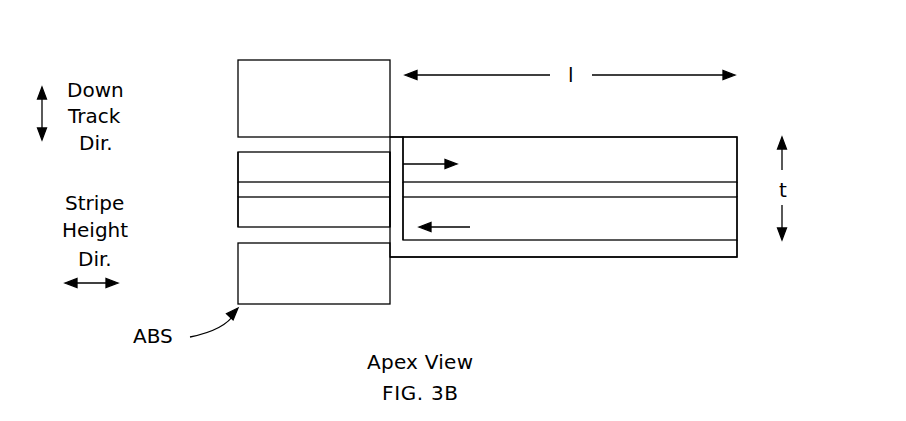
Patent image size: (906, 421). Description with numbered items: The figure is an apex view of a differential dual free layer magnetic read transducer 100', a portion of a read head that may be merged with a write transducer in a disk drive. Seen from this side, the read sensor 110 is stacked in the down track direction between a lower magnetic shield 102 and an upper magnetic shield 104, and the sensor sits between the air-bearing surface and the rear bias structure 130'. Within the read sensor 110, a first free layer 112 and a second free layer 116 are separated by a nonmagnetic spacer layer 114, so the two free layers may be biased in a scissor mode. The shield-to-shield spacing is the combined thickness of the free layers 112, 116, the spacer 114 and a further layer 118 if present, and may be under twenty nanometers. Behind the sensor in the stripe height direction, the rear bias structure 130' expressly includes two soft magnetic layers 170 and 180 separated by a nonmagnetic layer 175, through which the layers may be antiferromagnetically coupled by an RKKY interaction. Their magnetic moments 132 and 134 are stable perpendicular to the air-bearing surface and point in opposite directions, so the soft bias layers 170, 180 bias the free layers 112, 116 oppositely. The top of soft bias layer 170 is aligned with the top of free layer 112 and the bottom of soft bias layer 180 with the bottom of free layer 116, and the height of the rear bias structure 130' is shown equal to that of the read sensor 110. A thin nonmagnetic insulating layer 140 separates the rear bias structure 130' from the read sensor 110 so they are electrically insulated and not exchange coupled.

The magnetic read transducer 100' is at (455, 164).
The magnetic shield 104 is at (314, 98).
The free layer 116 is at (314, 167).
The free layer 112 is at (314, 212).
The magnetic shield 102 is at (314, 273).
The read sensor 110 is at (181, 180).
The nonmagnetic spacer layer 114 is at (237, 190).
The rear bias structure 130' is at (581, 194).
The soft magnetic layer 180 is at (570, 159).
The soft magnetic layer 170 is at (570, 218).
The nonmagnetic layer 175 is at (737, 188).
The layer 118 is at (405, 137).
The insulating layer 140 is at (397, 258).
The magnetic moment 134 is at (435, 164).
The magnetic moment 132 is at (458, 228).